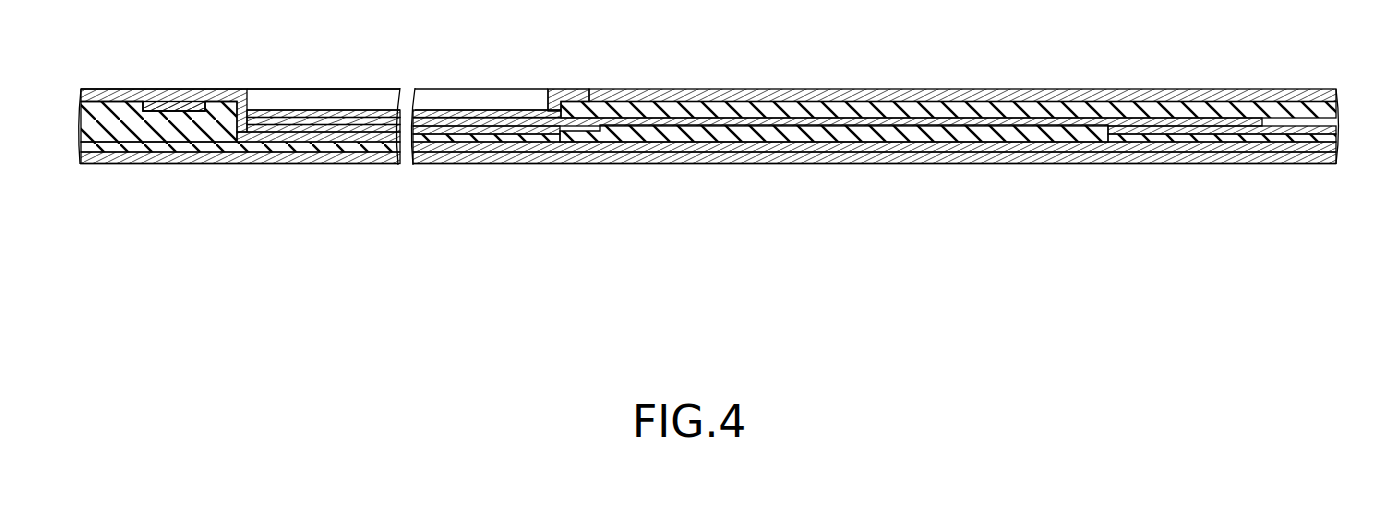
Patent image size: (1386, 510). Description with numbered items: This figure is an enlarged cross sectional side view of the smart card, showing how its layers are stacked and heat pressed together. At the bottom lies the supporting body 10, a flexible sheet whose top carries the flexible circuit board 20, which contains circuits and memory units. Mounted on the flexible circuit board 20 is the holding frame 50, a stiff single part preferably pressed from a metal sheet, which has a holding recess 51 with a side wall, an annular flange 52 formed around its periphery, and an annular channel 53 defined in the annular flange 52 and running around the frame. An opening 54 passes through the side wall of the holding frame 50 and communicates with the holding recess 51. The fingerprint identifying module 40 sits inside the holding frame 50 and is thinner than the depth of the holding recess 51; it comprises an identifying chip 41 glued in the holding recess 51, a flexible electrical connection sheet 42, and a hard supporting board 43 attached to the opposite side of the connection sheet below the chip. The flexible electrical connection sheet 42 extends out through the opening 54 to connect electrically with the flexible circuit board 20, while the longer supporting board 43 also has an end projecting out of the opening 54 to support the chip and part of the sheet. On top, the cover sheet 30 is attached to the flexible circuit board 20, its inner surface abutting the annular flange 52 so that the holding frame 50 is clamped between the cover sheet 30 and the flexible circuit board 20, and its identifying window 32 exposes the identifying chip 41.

The supporting body 10 is at (950, 155).
The flexible circuit board 20 is at (1297, 141).
The cover sheet 30 is at (815, 93).
The identifying window 32 is at (580, 92).
The fingerprint identifying module 40 is at (330, 103).
The identifying chip 41 is at (450, 115).
The flexible electrical connection sheet 42 is at (690, 122).
The supporting board 43 is at (527, 130).
The holding frame 50 is at (176, 118).
The holding recess 51 is at (268, 130).
The annular flange 52 is at (217, 95).
The annular channel 53 is at (152, 107).
The opening 54 is at (542, 117).